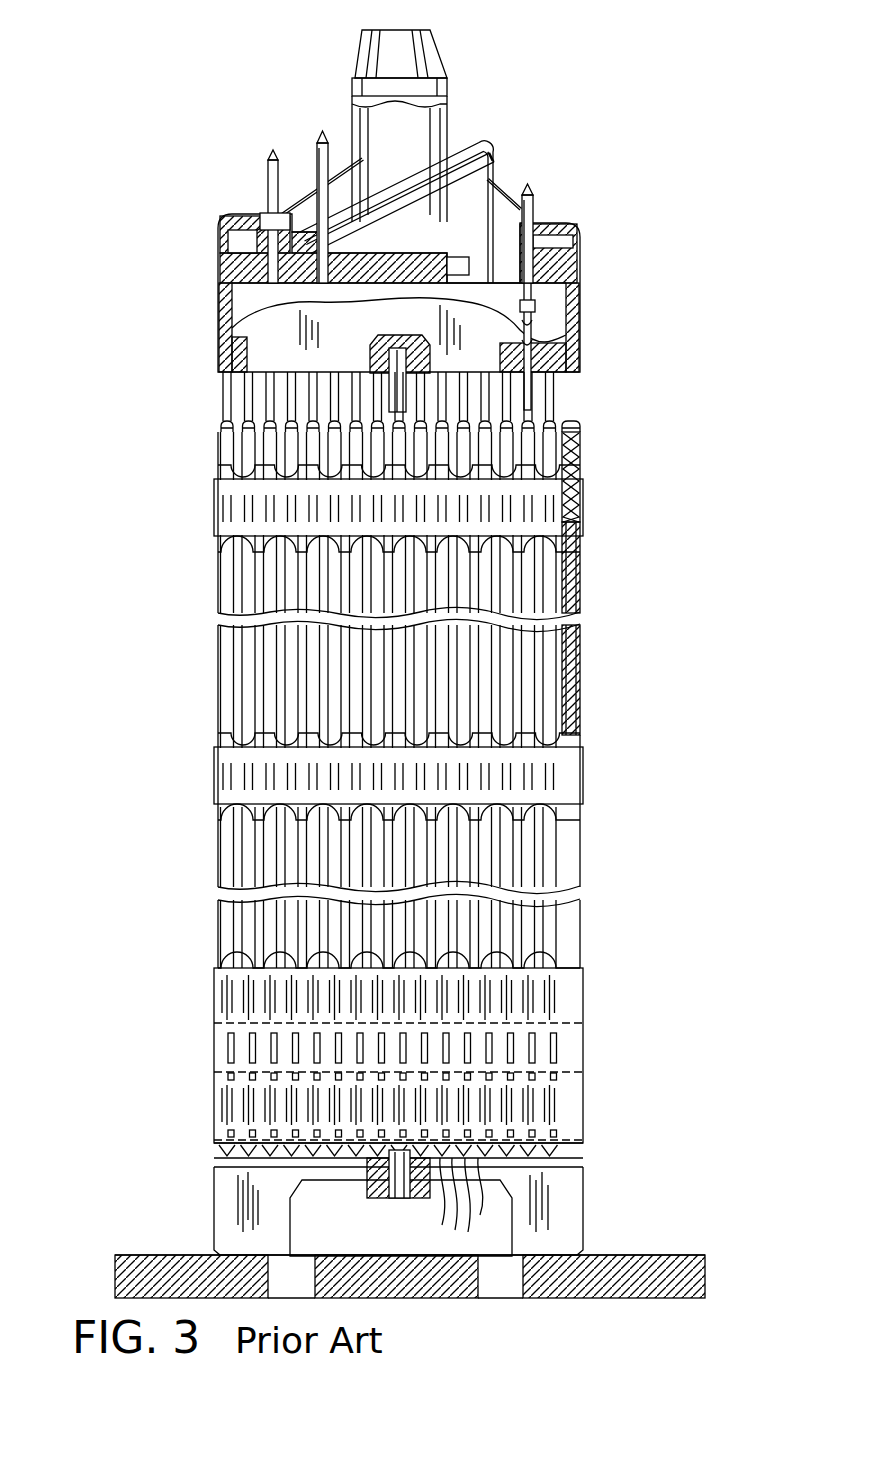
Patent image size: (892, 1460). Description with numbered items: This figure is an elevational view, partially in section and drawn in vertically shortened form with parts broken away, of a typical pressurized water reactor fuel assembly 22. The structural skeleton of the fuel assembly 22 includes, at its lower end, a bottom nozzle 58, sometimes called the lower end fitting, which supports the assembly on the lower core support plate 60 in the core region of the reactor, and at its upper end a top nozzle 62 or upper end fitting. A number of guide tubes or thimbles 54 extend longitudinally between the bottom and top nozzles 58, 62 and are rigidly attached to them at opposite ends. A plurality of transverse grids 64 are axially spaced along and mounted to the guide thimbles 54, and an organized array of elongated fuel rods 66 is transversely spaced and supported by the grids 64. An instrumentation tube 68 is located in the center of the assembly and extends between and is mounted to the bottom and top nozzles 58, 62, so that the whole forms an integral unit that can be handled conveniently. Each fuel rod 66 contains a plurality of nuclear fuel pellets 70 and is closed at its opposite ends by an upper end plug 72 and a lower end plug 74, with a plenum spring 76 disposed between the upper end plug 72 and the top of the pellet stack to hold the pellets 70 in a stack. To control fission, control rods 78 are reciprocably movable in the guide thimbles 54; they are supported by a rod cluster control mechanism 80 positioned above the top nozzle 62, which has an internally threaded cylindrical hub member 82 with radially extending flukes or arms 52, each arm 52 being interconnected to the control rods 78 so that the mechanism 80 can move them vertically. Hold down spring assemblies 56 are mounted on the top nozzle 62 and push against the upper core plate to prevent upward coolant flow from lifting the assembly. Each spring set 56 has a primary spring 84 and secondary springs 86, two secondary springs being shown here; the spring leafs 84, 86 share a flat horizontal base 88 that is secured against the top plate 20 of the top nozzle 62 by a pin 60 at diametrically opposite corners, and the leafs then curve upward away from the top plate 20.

The top plate 20 is at (220, 270).
The fuel assembly 22 is at (668, 283).
The radially extending flukes or arms 52 is at (312, 200).
The guide tubes or thimbles 54 is at (250, 405).
The hold down spring assemblies 56 is at (250, 298).
The bottom nozzle 58 is at (587, 1200).
The lower core support plate / pin 60 is at (240, 222).
The top nozzle 62 is at (586, 264).
The transverse grids 64 is at (215, 518).
The fuel rods 66 is at (218, 678).
The instrumentation tube 68 is at (402, 1200).
The nuclear fuel pellets 70 is at (582, 587).
The upper end plug 72 is at (582, 428).
The lower end plug 74 is at (466, 1196).
The plenum spring 76 is at (582, 478).
The control rods 78 is at (582, 340).
The rod cluster control mechanism 80 is at (494, 136).
The internally threaded cylindrical hub member 82 is at (447, 93).
The primary spring 84 is at (452, 133).
The secondary spring 86 is at (453, 185).
The flat horizontal base 88 is at (272, 178).